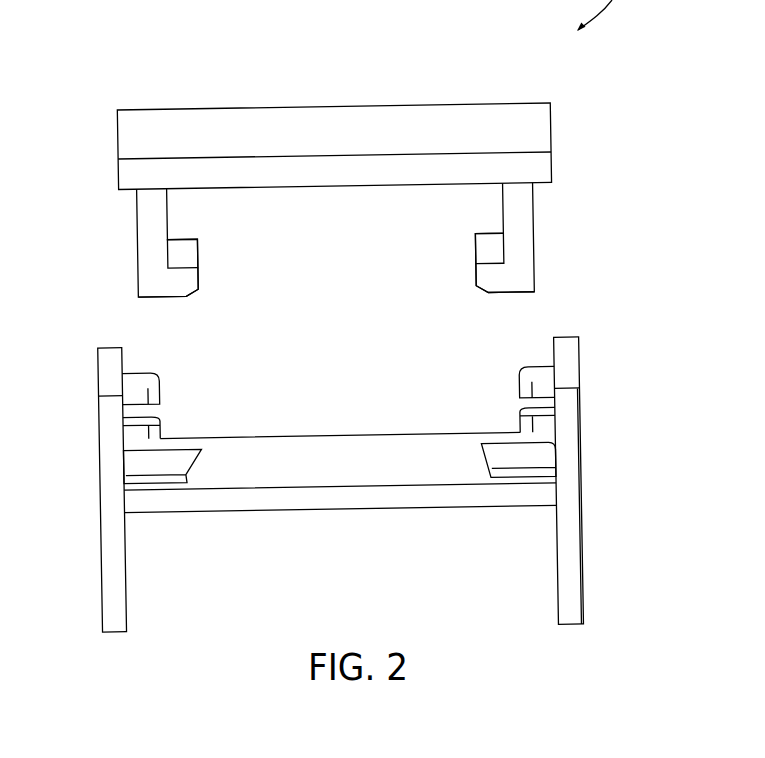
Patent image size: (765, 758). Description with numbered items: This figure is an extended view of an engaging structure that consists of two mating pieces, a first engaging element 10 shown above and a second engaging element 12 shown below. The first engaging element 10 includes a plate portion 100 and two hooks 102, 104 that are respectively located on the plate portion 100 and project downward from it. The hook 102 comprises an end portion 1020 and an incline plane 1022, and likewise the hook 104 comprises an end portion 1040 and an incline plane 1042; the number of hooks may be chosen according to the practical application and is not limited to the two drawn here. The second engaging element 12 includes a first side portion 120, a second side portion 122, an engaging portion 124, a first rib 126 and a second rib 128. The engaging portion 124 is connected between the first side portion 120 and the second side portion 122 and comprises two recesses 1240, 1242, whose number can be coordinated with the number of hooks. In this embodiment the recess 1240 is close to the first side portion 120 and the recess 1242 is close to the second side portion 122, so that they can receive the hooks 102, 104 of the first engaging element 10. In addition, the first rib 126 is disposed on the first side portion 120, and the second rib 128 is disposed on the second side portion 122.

The first engaging element 10 is at (472, 97).
The plate portion 100 is at (264, 107).
The hook 102 is at (137, 278).
The end portion 1020 is at (197, 242).
The incline plane 1022 is at (188, 292).
The hook 104 is at (535, 247).
The end portion 1040 is at (475, 236).
The incline plane 1042 is at (487, 290).
The second engaging element 12 is at (603, 403).
The first side portion 120 is at (98, 506).
The second side portion 122 is at (583, 470).
The engaging portion 124 is at (370, 512).
The recess 1240 is at (197, 457).
The recess 1242 is at (488, 465).
The first rib 126 is at (160, 393).
The second rib 128 is at (520, 390).